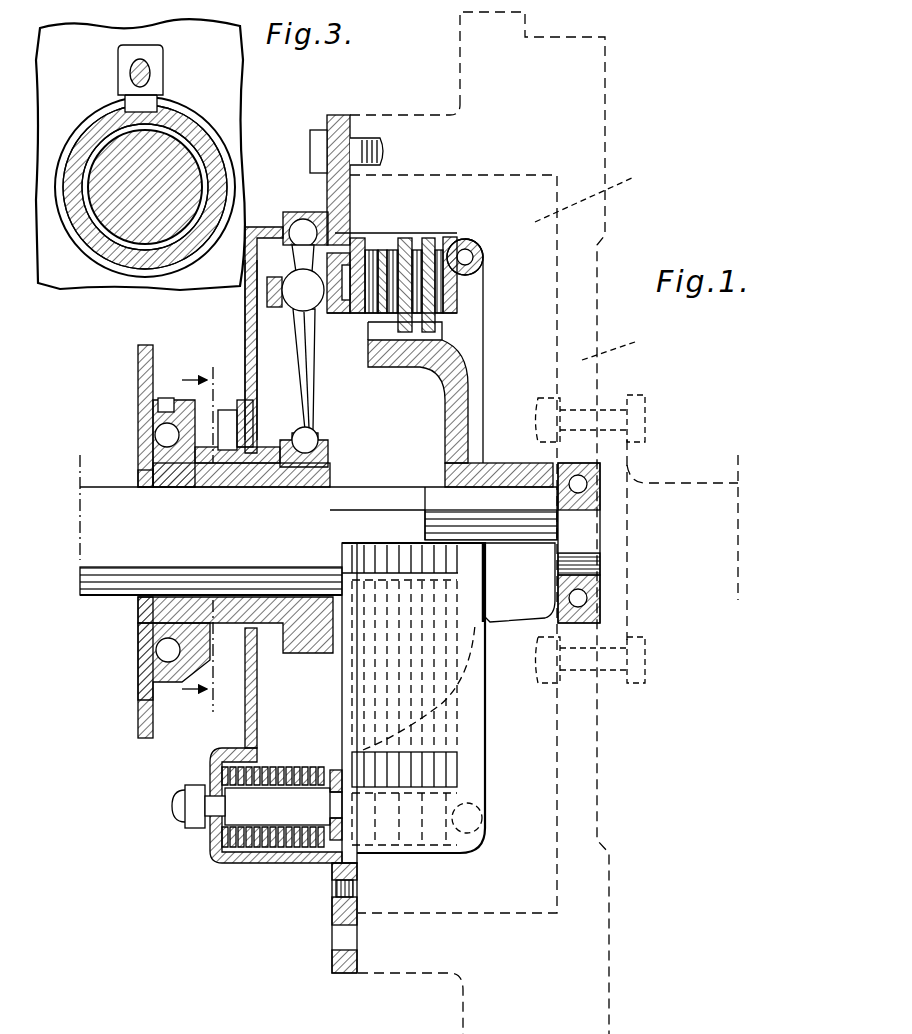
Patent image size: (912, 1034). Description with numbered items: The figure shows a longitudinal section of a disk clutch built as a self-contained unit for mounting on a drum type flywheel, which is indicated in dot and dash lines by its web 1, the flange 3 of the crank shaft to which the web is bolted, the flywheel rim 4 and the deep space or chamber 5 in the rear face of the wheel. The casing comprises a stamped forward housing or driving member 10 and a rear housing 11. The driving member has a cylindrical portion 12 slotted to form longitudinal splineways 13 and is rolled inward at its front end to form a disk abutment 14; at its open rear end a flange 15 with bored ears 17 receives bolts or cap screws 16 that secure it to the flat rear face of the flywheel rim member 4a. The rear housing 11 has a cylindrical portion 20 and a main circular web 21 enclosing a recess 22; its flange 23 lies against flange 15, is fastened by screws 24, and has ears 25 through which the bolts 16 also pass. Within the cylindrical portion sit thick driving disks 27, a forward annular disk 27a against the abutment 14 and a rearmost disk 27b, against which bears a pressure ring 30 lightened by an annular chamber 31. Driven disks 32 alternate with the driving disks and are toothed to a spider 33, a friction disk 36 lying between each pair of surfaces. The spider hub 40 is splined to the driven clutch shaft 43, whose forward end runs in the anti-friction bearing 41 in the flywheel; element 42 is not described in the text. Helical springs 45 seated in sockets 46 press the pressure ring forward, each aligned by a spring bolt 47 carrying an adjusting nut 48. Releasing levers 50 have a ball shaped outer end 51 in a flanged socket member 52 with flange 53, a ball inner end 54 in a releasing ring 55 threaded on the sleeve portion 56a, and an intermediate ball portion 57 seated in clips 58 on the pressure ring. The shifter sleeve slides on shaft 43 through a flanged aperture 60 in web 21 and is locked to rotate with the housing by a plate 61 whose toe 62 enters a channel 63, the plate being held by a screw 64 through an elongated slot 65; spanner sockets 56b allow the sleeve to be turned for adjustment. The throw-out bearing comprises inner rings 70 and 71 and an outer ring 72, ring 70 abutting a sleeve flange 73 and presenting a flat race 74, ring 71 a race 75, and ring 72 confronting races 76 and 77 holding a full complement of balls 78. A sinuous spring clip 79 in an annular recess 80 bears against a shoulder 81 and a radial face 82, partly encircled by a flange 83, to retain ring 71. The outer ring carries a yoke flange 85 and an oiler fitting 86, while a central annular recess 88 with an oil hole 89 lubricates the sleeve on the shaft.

In FIG. 1, the web 1 is at (615, 344).
In FIG. 1, the flange 3 is at (612, 393).
In FIG. 1, the flywheel rim 4 is at (585, 113).
In FIG. 1, the flywheel rim member 4a is at (425, 115).
In FIG. 1, the space or chamber 5 is at (589, 192).
In FIG. 1, the forward housing or driving member 10 is at (345, 260).
In FIG. 1, the rear housing 11 is at (246, 318).
In FIG. 1, the cylindrical portion 12 is at (428, 240).
In FIG. 1, the splineways 13 is at (380, 245).
In FIG. 1, the disk abutment 14 is at (472, 250).
In FIG. 1, the flange 15 is at (340, 118).
In FIG. 1, the bolts or cap screws 16 is at (316, 152).
In FIG. 1, the ears 17 is at (360, 960).
In FIG. 1, the cylindrical portion 20 is at (252, 229).
In FIG. 1, the main circular web 21 is at (246, 350).
In FIG. 1, the space or recess 22 is at (408, 240).
In FIG. 1, the flange 23 is at (345, 908).
In FIG. 1, the bolts or screws 24 is at (358, 885).
In FIG. 1, the ears 25 is at (335, 963).
In FIG. 1, the driving disks 27 is at (425, 335).
In FIG. 1, the annular disk 27a is at (452, 240).
In FIG. 1, the annular disk 27b is at (370, 312).
In FIG. 1, the pressure member 30 is at (358, 312).
In FIG. 1, the annular chamber 31 is at (303, 290).
In FIG. 1, the driven plates or disks 32 is at (468, 330).
In FIG. 1, the carrier or spider 33 is at (470, 405).
In FIG. 1, the friction disk 36 is at (400, 335).
In FIG. 1, the hub 40 is at (520, 608).
In FIG. 1, the anti-friction bearing 41 is at (592, 500).
In FIG. 1, the shaft 42 is at (665, 490).
In FIG. 3, the driven clutch shaft 43 is at (113, 217).
In FIG. 1, the driven clutch shaft 43 is at (122, 585).
In FIG. 1, the helical springs 45 is at (278, 767).
In FIG. 1, the sockets 46 is at (222, 758).
In FIG. 1, the spring bolt 47 is at (276, 812).
In FIG. 1, the nut 48 is at (192, 829).
In FIG. 1, the releasing levers 50 is at (300, 372).
In FIG. 1, the outer end 51 is at (298, 212).
In FIG. 1, the socket member 52 is at (295, 222).
In FIG. 1, the flange 53 is at (246, 302).
In FIG. 1, the inner end 54 is at (312, 437).
In FIG. 1, the ring 55 is at (328, 448).
In FIG. 1, the screw threaded inward portion 56a is at (332, 470).
In FIG. 1, the sockets 56b is at (142, 478).
In FIG. 1, the ball shaped portion 57 is at (282, 306).
In FIG. 1, the clips 58 is at (275, 278).
In FIG. 1, the flanged aperture 60 is at (257, 640).
In FIG. 3, the plate 61 is at (153, 52).
In FIG. 1, the plate 61 is at (245, 400).
In FIG. 3, the toe portion 62 is at (142, 104).
In FIG. 1, the toe portion 62 is at (232, 489).
In FIG. 3, the channel or splineway 63 is at (145, 184).
In FIG. 1, the channel or splineway 63 is at (262, 489).
In FIG. 1, the screw 64 is at (226, 412).
In FIG. 3, the slot 65 is at (150, 70).
In FIG. 1, the inner ring or race member 70 is at (155, 447).
In FIG. 1, the inner ring or race member 71 is at (205, 489).
In FIG. 1, the outer ring or race member 72 is at (156, 410).
In FIG. 1, the flange 73 is at (160, 463).
In FIG. 1, the flat angular race 74 is at (162, 489).
In FIG. 1, the race surface 75 is at (185, 489).
In FIG. 1, the race surface 76 is at (158, 437).
In FIG. 1, the race surface 77 is at (192, 398).
In FIG. 1, the balls 78 is at (160, 428).
In FIG. 1, the spring clip 79 is at (205, 447).
In FIG. 1, the annular recess 80 is at (195, 597).
In FIG. 1, the shoulder 81 is at (215, 612).
In FIG. 1, the radial face 82 is at (178, 597).
In FIG. 1, the flange 83 is at (180, 650).
In FIG. 1, the flange 85 is at (140, 376).
In FIG. 1, the oiler fitting 86 is at (166, 398).
In FIG. 1, the central annular recess 88 is at (268, 600).
In FIG. 1, the oil hole 89 is at (225, 618).